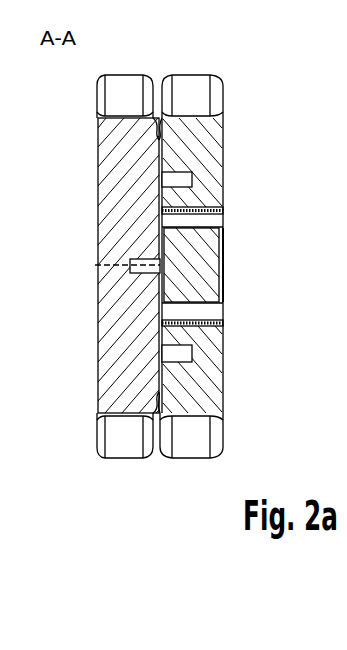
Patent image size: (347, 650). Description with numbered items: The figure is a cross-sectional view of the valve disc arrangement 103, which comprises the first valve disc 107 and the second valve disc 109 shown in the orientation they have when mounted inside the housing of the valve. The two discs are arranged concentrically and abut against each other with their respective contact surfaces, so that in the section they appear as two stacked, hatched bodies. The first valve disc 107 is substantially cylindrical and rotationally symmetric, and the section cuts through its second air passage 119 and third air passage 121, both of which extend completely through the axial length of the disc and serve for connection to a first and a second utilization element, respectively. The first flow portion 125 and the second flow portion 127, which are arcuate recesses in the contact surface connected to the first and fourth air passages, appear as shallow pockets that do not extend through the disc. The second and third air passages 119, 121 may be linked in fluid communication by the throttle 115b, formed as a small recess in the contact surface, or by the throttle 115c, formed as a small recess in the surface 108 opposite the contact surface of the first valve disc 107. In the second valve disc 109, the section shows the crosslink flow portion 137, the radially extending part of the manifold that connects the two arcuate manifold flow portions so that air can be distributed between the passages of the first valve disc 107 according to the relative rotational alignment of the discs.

The valve disc arrangement 103 is at (281, 82).
The first valve disc 107 is at (197, 88).
The second valve disc 109 is at (128, 88).
The first flow portion 125 is at (186, 176).
The second air passage 119 is at (210, 218).
The throttle 115b is at (165, 252).
The throttle 115c is at (229, 276).
The third air passage 121 is at (210, 313).
The second flow portion 127 is at (188, 355).
The surface opposite the contact surface 108 is at (229, 388).
The crosslink flow portion 137 is at (130, 263).